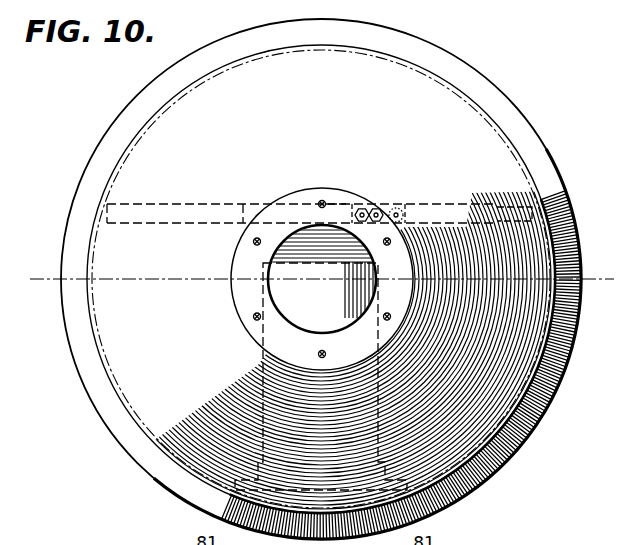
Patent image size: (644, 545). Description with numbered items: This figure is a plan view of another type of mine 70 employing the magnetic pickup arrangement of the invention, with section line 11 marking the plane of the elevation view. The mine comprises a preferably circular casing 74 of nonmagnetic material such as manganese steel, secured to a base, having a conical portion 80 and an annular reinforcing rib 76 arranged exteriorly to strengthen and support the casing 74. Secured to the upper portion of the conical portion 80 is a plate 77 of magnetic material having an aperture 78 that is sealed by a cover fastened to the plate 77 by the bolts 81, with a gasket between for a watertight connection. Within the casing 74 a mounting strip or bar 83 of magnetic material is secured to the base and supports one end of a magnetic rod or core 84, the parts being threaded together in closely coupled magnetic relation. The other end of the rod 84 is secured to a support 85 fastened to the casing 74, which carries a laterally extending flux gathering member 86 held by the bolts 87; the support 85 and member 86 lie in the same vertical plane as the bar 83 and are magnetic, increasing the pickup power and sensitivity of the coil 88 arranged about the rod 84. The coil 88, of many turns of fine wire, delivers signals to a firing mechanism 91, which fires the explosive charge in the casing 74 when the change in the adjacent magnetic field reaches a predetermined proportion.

The mine 70 is at (516, 130).
The casing 74 is at (522, 410).
The annular reinforcing rib 76 is at (485, 480).
The plate 77 is at (292, 195).
The aperture 78 is at (341, 330).
The conical portion 80 is at (167, 134).
The bolts 81 is at (254, 242).
The mounting strip or bar 83 is at (197, 207).
The magnetic rod or core 84 is at (400, 211).
The support 85 is at (443, 210).
The flux gathering member 86 is at (336, 203).
The bolts 87 is at (363, 207).
The coil 88 is at (396, 207).
The firing mechanism 91 is at (258, 294).
The section line 11- 11 is at (42, 296).